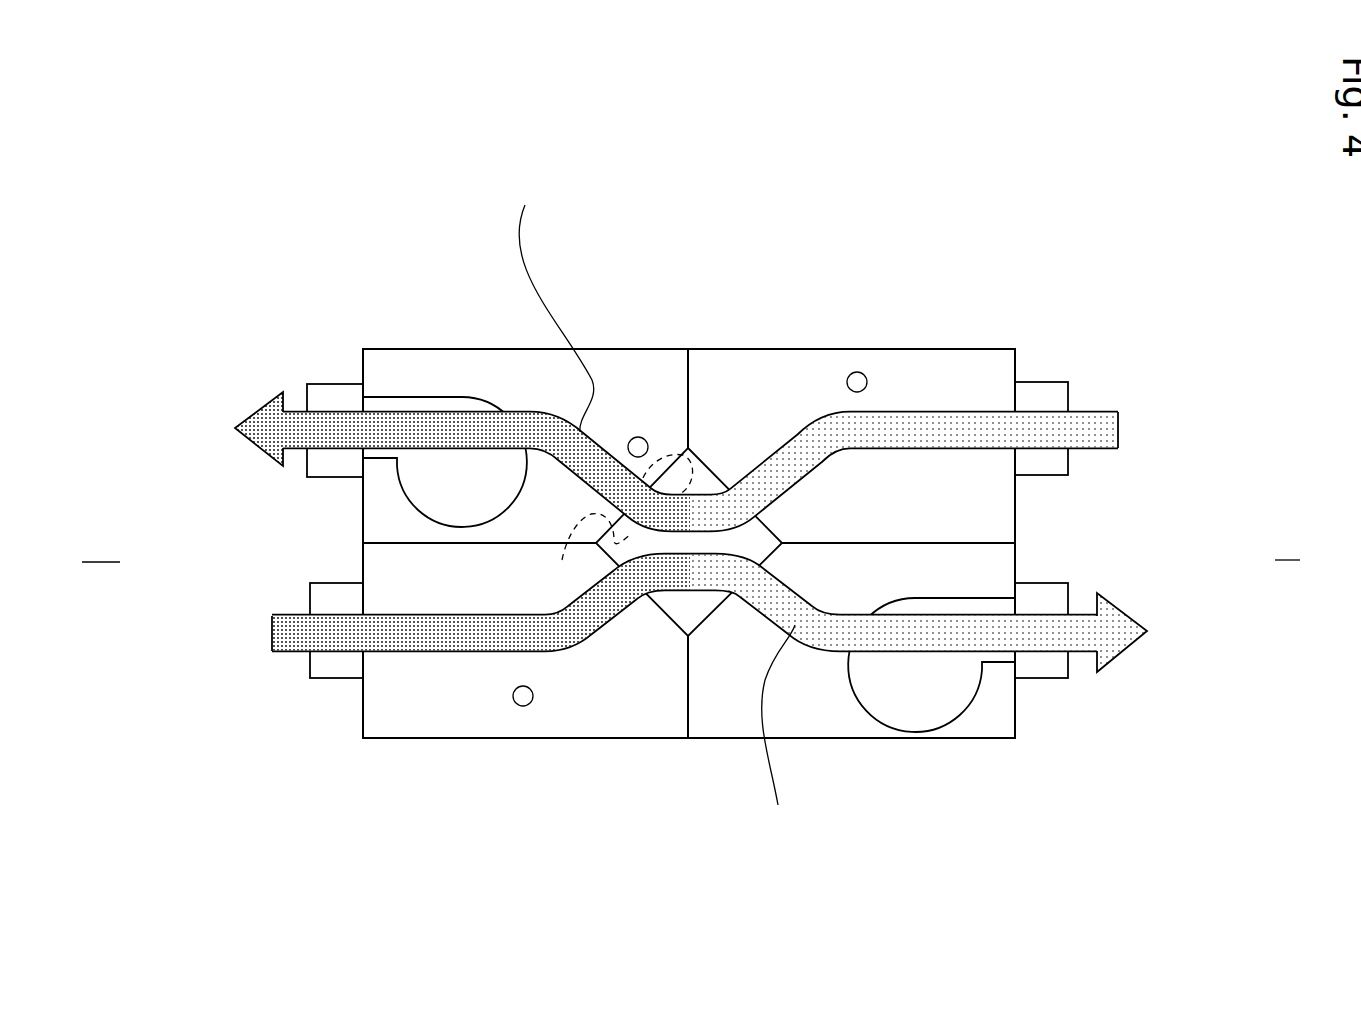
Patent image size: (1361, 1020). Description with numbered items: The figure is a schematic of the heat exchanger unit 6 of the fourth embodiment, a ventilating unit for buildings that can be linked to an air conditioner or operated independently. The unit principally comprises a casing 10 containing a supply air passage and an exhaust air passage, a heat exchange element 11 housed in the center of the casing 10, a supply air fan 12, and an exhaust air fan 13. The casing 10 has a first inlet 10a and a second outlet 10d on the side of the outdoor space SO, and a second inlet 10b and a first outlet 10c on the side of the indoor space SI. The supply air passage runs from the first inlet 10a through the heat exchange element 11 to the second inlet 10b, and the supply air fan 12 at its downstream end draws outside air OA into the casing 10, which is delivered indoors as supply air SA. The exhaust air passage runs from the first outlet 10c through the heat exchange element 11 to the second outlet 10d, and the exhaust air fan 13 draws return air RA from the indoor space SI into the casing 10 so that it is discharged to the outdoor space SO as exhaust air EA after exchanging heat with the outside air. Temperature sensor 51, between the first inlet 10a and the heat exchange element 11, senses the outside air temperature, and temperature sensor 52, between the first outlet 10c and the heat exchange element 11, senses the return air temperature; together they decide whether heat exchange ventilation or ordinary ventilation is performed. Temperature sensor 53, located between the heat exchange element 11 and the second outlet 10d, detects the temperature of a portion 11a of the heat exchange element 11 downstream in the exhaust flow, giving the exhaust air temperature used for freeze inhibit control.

The heat exchanger unit 6 is at (1158, 193).
The casing 10 is at (975, 349).
The first inlet 10a is at (352, 659).
The second inlet 10b is at (1026, 658).
The first outlet 10c is at (1026, 456).
The second outlet 10d is at (354, 454).
The heat exchange element 11 is at (709, 457).
The portion of the heat exchange element 11a is at (578, 530).
The supply air fan 12 is at (910, 718).
The exhaust air fan 13 is at (416, 403).
The temperature sensor 51 is at (523, 706).
The temperature sensor 52 is at (853, 372).
The temperature sensor 53 is at (639, 437).
The exhaust air EA is at (260, 415).
The return air RA is at (1090, 430).
The outside air OA is at (282, 650).
The supply air SA is at (1107, 640).
The outdoor space SO is at (101, 546).
The indoor space SI is at (1287, 544).